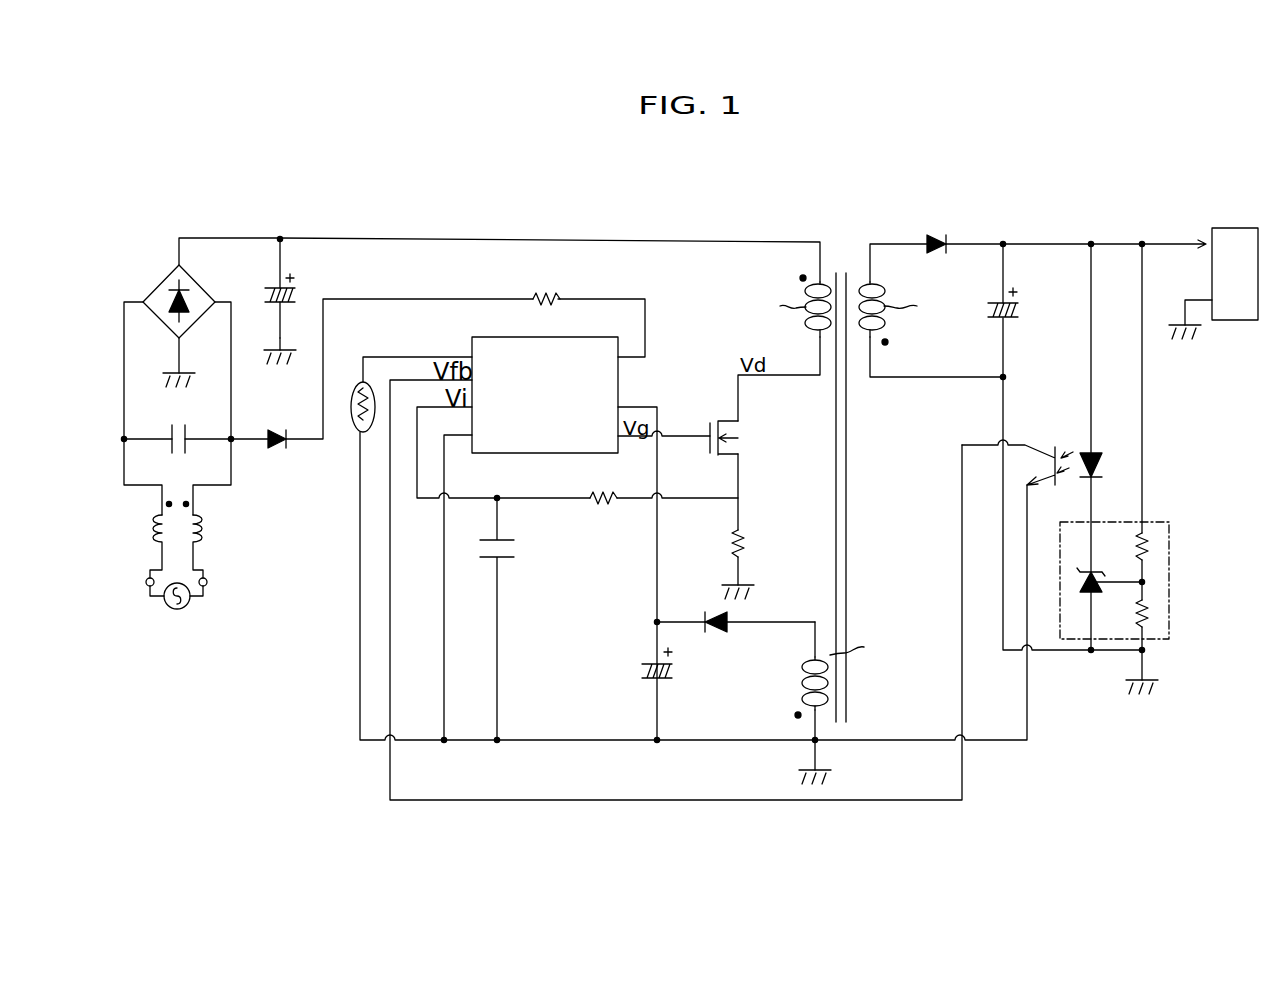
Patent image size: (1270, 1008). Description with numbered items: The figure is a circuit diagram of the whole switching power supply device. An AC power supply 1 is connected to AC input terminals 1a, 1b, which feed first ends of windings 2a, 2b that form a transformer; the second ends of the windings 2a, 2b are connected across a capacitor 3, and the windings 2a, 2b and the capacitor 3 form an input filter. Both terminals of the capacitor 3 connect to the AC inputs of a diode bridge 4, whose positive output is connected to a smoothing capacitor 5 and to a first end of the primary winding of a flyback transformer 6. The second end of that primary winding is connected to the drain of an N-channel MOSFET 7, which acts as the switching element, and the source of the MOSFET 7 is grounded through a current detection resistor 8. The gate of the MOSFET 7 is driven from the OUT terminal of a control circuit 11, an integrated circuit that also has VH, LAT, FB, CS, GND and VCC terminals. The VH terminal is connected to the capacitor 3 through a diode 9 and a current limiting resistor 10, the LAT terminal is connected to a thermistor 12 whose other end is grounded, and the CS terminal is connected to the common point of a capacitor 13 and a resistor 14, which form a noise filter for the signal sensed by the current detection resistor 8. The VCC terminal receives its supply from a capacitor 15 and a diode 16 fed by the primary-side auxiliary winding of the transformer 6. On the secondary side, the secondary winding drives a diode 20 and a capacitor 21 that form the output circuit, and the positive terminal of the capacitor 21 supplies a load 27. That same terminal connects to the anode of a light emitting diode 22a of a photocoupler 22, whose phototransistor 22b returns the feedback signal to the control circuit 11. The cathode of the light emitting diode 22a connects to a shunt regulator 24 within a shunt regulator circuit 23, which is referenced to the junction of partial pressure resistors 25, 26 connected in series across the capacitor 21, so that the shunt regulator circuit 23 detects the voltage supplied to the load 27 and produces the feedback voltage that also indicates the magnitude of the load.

The AC power supply 1 is at (186, 608).
The AC input terminal 1a is at (146, 581).
The AC input terminal 1b is at (207, 581).
The winding 2a is at (152, 527).
The winding 2b is at (202, 527).
The capacitor 3 is at (188, 430).
The diode bridge 4 is at (204, 288).
The smoothing capacitor 5 is at (296, 300).
The flyback transformer 6 is at (846, 254).
The MOSFET 7 is at (718, 422).
The current detection resistor 8 is at (748, 545).
The diode 9 is at (283, 450).
The current limiting resistor 10 is at (560, 297).
The control circuit 11 is at (547, 337).
The thermistor 12 is at (360, 384).
The capacitor 13 is at (490, 560).
The resistor 14 is at (600, 510).
The capacitor 15 is at (650, 665).
The diode 16 is at (712, 615).
The diode 20 is at (936, 235).
The capacitor 21 is at (1020, 310).
The photocoupler 22 is at (1055, 425).
The light emitting diode 22a is at (1098, 455).
The phototransistor 22b is at (1041, 445).
The shunt regulator circuit 23 is at (1125, 551).
The shunt regulator 24 is at (1078, 580).
The partial pressure resistor 25 is at (1152, 545).
The partial pressure resistor 26 is at (1152, 613).
The load 27 is at (1238, 228).